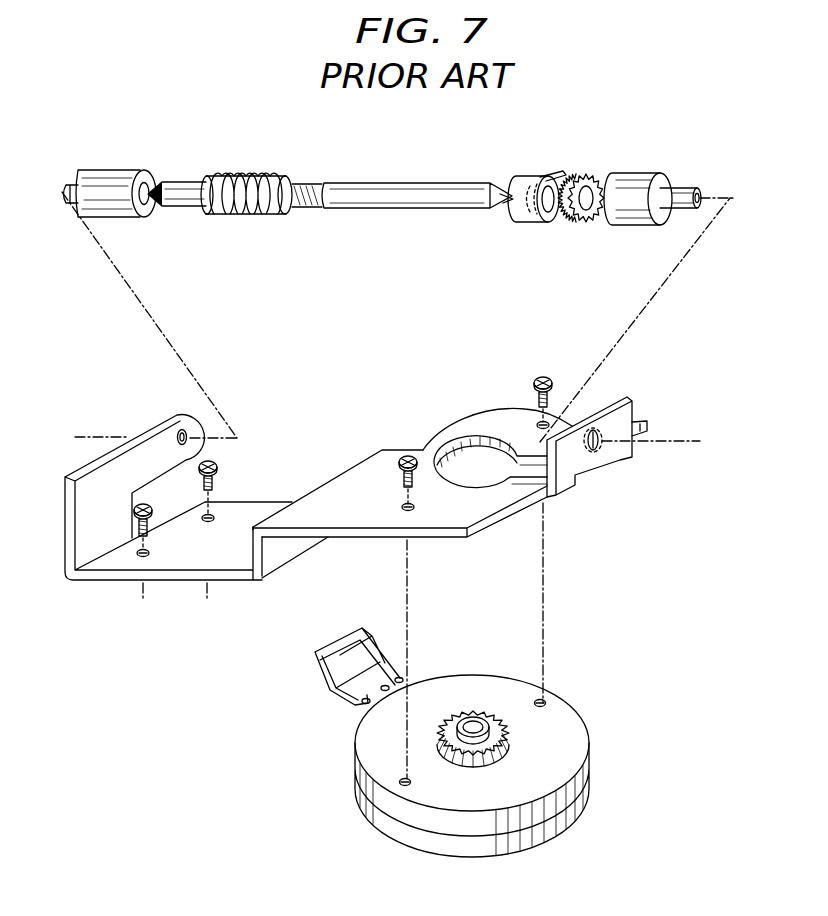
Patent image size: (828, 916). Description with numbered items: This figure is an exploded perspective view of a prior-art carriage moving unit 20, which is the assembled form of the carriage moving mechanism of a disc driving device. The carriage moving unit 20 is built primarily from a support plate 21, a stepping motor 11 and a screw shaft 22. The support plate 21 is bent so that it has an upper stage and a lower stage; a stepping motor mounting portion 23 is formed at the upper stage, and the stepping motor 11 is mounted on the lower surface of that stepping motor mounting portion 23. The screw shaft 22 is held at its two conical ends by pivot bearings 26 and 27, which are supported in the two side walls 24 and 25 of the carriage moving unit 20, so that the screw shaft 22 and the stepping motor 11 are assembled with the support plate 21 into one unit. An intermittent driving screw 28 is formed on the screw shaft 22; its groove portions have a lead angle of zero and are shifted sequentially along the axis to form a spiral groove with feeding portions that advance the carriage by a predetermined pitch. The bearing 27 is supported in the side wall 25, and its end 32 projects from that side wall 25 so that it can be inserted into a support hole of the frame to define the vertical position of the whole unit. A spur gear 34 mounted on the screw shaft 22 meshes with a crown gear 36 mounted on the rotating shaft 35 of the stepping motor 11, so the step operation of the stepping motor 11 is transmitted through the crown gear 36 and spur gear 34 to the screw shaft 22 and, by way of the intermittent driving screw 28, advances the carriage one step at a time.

The stepping motor 11 is at (580, 797).
The carriage moving unit 20 is at (290, 603).
The support plate 21 is at (380, 450).
The screw shaft 22 is at (388, 184).
The stepping motor mounting portion 23 is at (490, 412).
The side wall 24 is at (149, 418).
The side wall 25 is at (638, 401).
The bearing 26 is at (140, 170).
The bearing 27 is at (641, 172).
The intermittent driving screw 28 is at (251, 172).
The end of the bearing 32 is at (688, 186).
The spur gear 34 is at (588, 173).
The rotating shaft 35 is at (500, 728).
The crown gear 36 is at (493, 755).